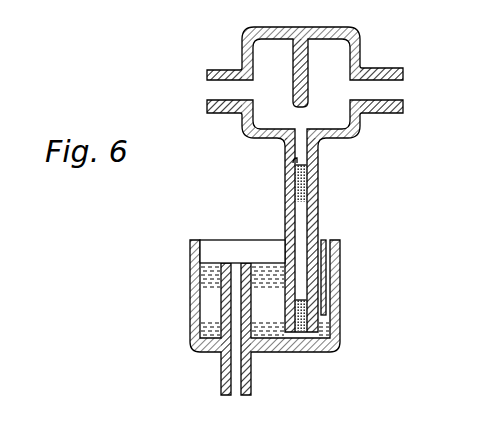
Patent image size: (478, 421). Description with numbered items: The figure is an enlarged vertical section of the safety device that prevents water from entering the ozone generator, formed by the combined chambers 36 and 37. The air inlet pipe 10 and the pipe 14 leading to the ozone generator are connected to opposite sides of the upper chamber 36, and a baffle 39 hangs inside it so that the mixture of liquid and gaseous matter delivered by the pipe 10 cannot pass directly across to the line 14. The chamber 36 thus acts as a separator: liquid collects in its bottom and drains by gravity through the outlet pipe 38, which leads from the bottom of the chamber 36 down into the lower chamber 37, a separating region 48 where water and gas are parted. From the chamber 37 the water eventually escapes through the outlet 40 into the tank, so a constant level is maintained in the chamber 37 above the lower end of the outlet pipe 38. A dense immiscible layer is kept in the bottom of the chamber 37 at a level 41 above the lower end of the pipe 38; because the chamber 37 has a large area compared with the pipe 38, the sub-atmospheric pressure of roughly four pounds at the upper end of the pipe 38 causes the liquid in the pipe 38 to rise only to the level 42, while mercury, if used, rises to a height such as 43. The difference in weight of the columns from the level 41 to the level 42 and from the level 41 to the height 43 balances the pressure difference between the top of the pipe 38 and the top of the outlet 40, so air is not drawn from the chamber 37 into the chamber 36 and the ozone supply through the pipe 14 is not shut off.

The air inlet pipe 10 is at (223, 70).
The pipe 14 is at (393, 68).
The chamber 36 is at (340, 28).
The chamber 37 is at (339, 249).
The outlet pipe 38 is at (320, 181).
The baffle 39 is at (307, 50).
The outlet 40 is at (236, 263).
The level 41 is at (208, 318).
The level 42 is at (285, 161).
The height 43 is at (338, 283).
The separating region 48 is at (265, 262).